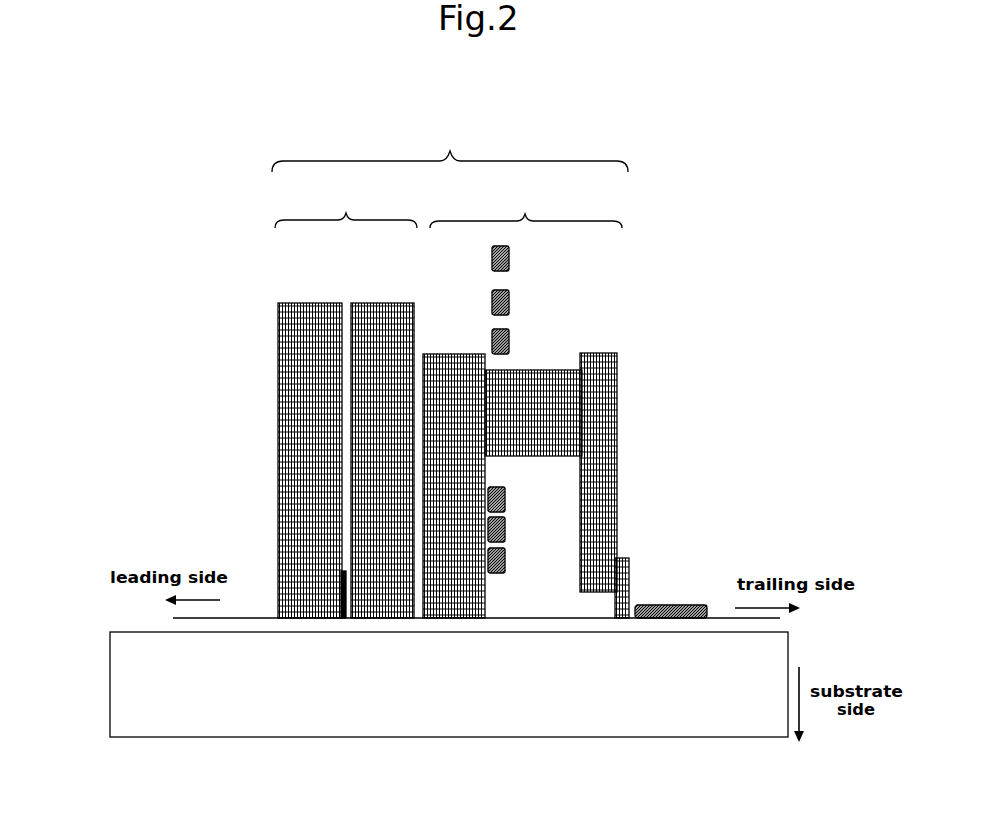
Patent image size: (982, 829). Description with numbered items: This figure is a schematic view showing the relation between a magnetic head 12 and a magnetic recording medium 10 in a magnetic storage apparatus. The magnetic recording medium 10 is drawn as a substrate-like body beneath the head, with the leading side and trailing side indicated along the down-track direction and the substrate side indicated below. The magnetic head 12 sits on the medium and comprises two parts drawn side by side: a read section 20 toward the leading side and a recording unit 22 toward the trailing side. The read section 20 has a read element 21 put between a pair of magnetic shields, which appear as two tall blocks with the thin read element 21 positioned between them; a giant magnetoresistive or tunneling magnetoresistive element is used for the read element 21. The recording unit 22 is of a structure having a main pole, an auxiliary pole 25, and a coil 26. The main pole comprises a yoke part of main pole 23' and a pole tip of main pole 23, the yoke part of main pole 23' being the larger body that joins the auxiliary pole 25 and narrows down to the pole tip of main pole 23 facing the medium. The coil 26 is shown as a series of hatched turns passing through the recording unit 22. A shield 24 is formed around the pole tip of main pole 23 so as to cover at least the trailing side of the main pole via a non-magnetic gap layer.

The magnetic recording medium 10 is at (132, 685).
The magnetic head 12 is at (450, 140).
The read section 20 is at (346, 401).
The read element 21 is at (343, 580).
The recording unit 22 is at (526, 206).
The pole tip of main pole 23 is at (646, 559).
The yoke part of main pole 23' is at (590, 472).
The shield 24 is at (650, 604).
The auxiliary pole 25 is at (445, 599).
The coil 26 is at (509, 252).